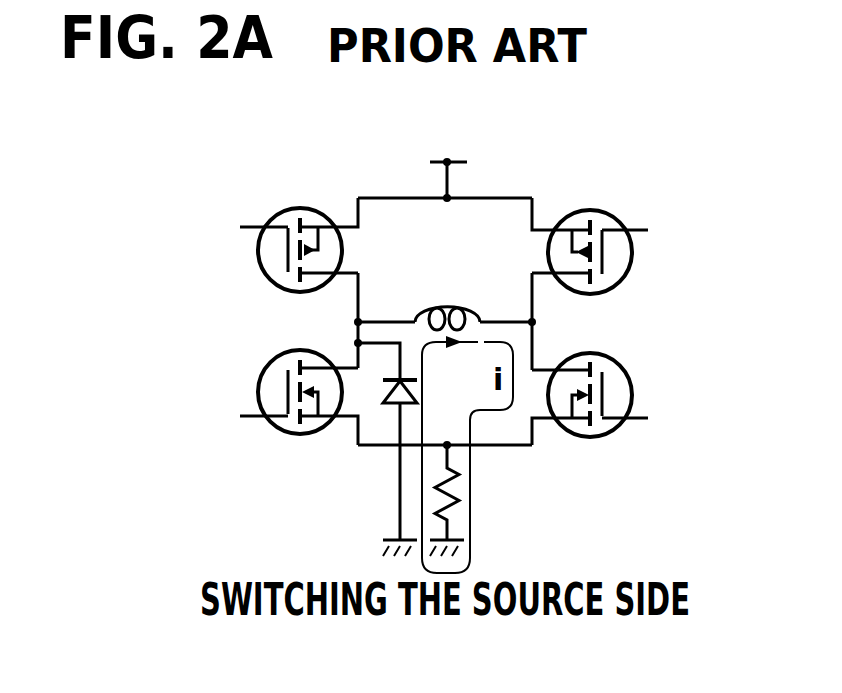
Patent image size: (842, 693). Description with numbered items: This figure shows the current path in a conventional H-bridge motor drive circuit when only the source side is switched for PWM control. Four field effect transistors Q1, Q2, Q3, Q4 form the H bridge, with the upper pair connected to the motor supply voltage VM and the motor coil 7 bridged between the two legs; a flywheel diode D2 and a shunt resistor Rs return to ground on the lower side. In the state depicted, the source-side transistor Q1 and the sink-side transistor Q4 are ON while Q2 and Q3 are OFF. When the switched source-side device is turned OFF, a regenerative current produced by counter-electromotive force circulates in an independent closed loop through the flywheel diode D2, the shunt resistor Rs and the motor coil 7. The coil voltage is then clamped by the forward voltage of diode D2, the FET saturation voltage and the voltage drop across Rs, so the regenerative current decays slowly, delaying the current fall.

The motor coil 7 is at (467, 306).
The field effect transistor Q1 is at (281, 240).
The field effect transistor Q2 is at (281, 381).
The field effect transistor Q3 is at (613, 240).
The field effect transistor Q4 is at (613, 381).
The flywheel diode D2 is at (390, 406).
The shunt resistor RS is at (459, 497).
The motor supply voltage VM is at (446, 158).